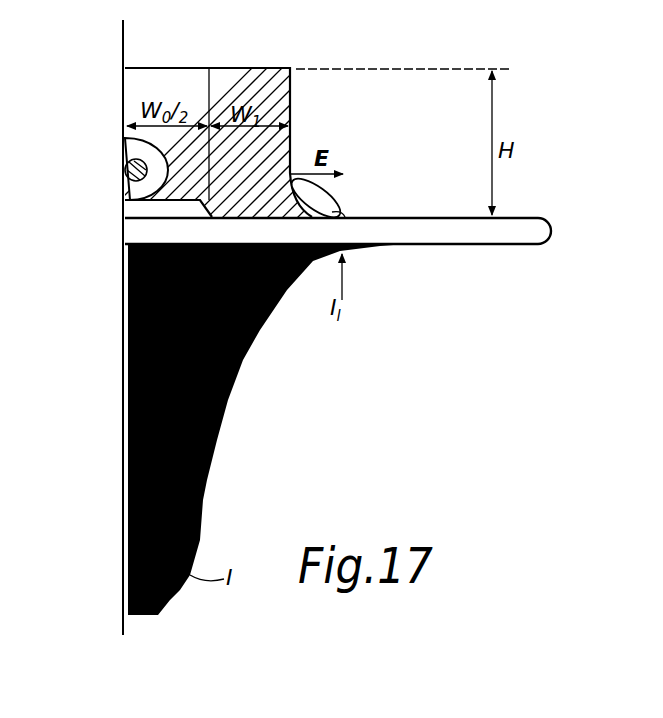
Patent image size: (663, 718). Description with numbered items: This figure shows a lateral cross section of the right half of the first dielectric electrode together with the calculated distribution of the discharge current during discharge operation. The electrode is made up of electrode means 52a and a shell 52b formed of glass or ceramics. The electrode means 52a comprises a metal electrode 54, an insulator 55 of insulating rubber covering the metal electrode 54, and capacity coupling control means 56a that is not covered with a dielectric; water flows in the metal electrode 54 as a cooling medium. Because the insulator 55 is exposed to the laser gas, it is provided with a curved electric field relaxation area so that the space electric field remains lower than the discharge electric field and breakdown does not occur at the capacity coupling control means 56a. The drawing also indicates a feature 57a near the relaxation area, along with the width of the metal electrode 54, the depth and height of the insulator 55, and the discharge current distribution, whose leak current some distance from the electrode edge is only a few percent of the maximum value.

The electrode means 52a is at (178, 68).
The shell 52b is at (518, 232).
The metal electrode 54 is at (127, 148).
The insulator 55 is at (257, 75).
The capacity coupling control means 56a is at (375, 132).
The bead 57a is at (322, 192).